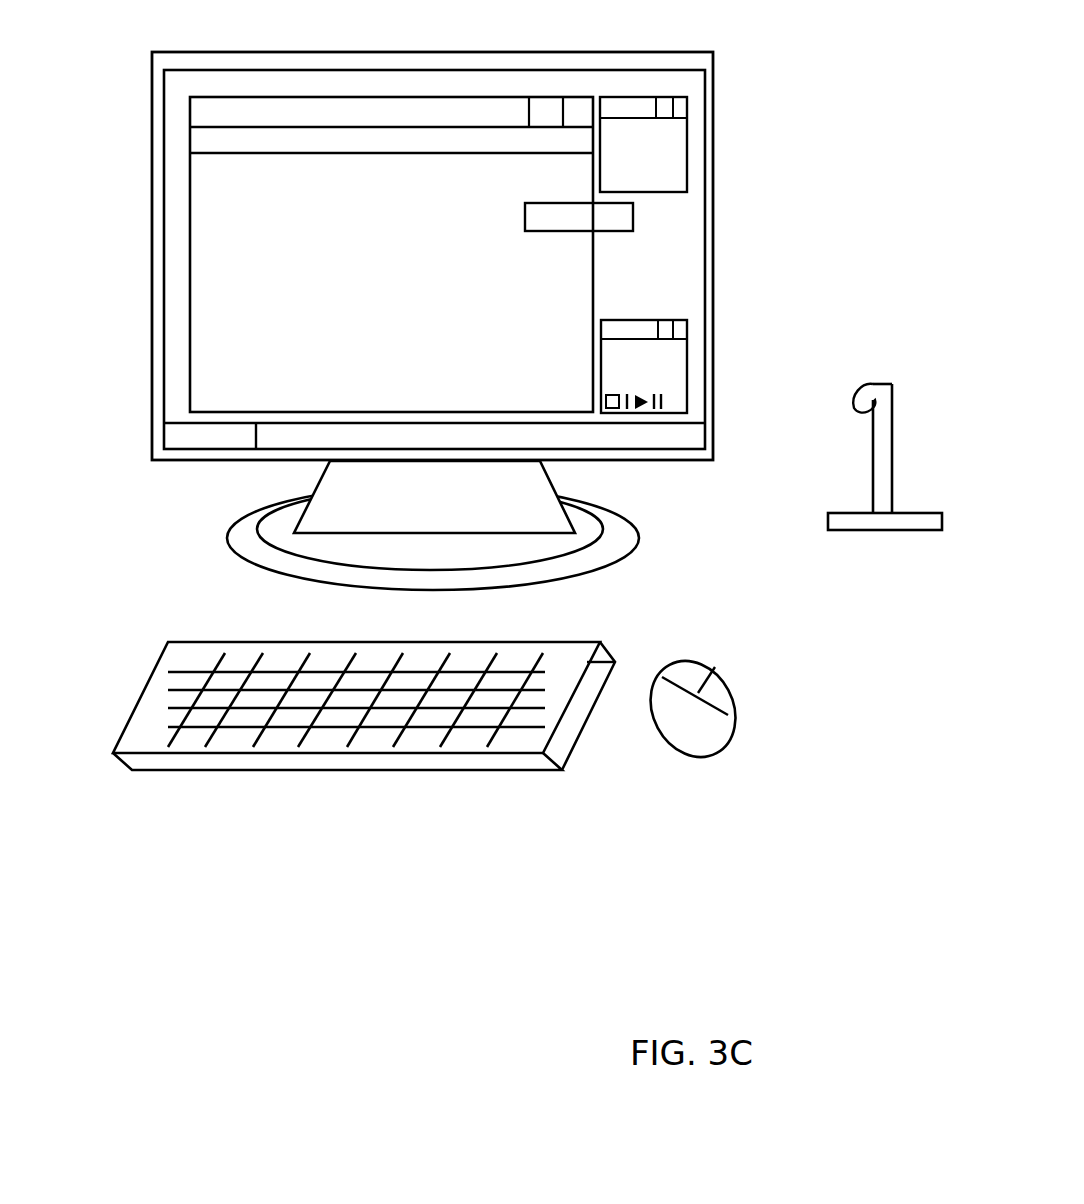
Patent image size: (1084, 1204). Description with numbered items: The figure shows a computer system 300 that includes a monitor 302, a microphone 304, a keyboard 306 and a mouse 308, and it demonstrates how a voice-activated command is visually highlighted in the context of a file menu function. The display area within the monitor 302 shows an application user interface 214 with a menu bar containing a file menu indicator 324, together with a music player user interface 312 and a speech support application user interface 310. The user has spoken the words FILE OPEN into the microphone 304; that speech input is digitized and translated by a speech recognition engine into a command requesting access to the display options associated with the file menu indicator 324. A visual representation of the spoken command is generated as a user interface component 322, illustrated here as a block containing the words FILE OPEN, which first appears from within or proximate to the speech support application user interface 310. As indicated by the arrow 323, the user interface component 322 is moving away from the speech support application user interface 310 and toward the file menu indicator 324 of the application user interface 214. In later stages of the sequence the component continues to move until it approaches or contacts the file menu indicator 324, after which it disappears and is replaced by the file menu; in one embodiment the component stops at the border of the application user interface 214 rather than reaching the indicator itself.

The application window 214 is at (391, 208).
The computer system 300 is at (858, 84).
The monitor 302 is at (463, 321).
The microphone 304 is at (885, 425).
The keyboard 306 is at (376, 672).
The mouse 308 is at (710, 709).
The speech support application user interface 310 is at (680, 134).
The music player user interface 312 is at (687, 365).
The user interface component 322 is at (554, 198).
The arrow 323 is at (712, 183).
The file menu indicator 324 is at (322, 118).